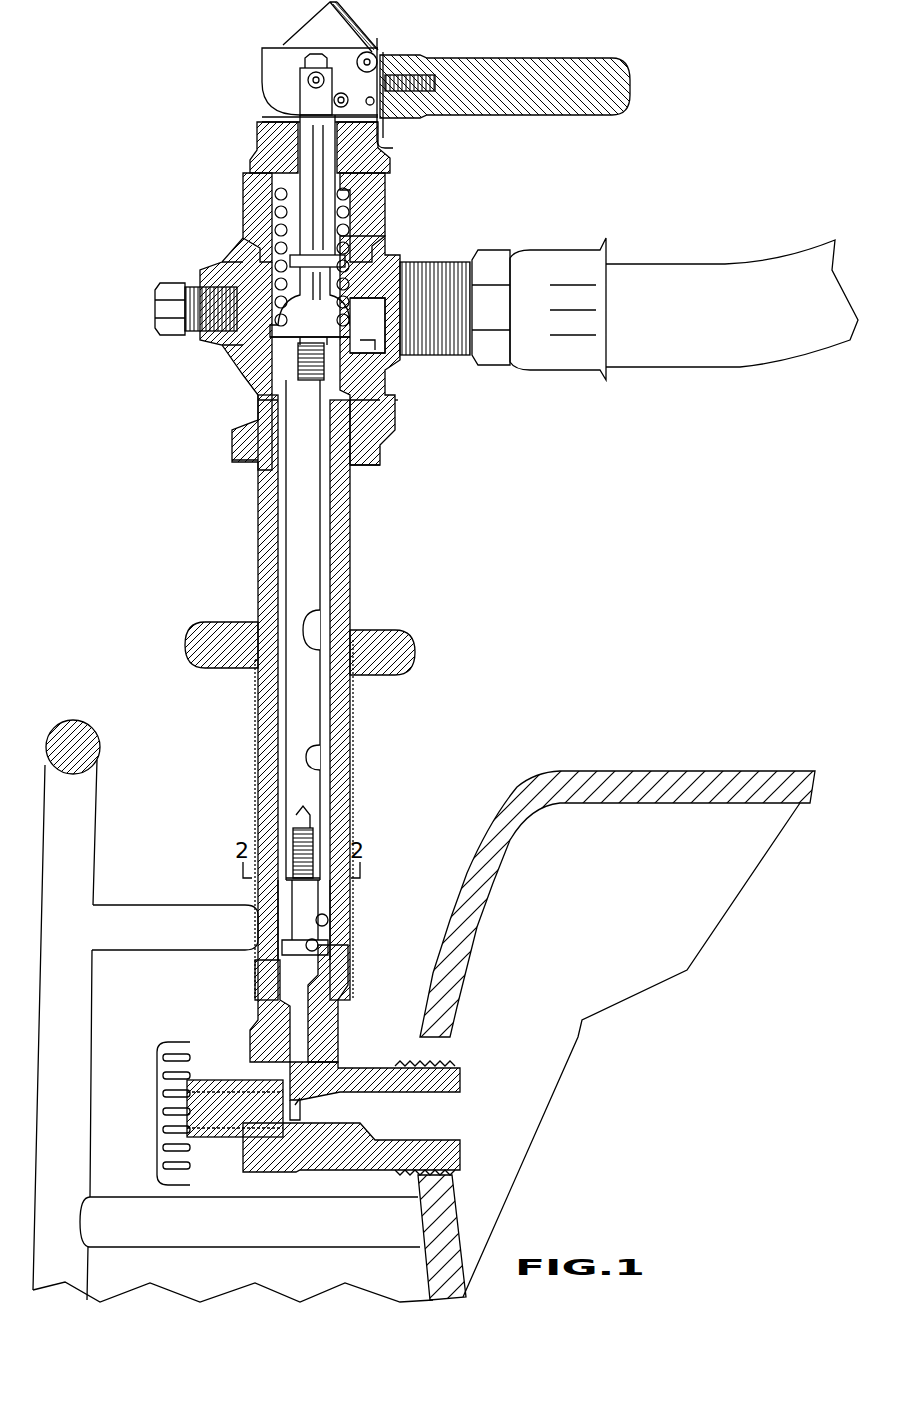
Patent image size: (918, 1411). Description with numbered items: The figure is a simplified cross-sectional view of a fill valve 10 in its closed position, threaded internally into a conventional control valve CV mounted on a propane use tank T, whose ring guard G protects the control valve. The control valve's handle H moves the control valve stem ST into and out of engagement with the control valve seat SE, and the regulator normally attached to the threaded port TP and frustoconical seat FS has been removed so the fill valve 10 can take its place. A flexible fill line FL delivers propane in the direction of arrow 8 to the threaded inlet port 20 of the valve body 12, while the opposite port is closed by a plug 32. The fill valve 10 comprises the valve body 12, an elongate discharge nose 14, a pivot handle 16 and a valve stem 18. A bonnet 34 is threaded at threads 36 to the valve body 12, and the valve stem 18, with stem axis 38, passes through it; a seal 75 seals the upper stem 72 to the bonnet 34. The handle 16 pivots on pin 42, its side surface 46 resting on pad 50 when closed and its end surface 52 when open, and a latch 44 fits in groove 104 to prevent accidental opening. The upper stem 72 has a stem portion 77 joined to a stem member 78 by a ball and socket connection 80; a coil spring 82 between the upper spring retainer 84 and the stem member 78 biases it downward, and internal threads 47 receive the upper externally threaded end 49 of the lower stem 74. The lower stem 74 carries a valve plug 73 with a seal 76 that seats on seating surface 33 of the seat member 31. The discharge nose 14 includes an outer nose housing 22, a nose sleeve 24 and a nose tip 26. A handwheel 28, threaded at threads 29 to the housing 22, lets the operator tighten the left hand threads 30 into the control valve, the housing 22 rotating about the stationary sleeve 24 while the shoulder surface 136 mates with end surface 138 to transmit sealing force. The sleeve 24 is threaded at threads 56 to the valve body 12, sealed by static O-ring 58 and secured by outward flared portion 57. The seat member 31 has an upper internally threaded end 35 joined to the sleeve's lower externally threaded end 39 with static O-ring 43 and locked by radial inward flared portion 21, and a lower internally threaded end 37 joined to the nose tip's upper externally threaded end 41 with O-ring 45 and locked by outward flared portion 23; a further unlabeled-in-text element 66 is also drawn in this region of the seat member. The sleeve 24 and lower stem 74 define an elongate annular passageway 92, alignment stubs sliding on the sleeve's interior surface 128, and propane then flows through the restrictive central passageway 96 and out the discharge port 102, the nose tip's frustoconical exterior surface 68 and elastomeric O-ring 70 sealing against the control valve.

The arrow 8 is at (370, 316).
The fill valve 10 is at (381, 572).
The valve body 12 is at (233, 268).
The elongate discharge nose 14 is at (218, 810).
The pivot handle 16 is at (578, 112).
The valve stem 18 is at (298, 576).
The threaded inlet port 20 is at (440, 268).
The radial inward flared portion 21 is at (330, 888).
The outer nose housing 22 is at (262, 727).
The outward flared portion 23 is at (322, 985).
The nose sleeve 24 is at (338, 713).
The nose tip 26 is at (320, 1020).
The handwheel 28 is at (395, 668).
The threads 29 is at (318, 610).
The threads 30 is at (262, 1018).
The seat member 31 is at (272, 962).
The plug 32 is at (195, 330).
The seating surface 33 is at (318, 942).
The bonnet 34 is at (262, 147).
The upper internally threaded end 35 is at (328, 922).
The threads 36 is at (262, 250).
The lower internally threaded end 37 is at (268, 985).
The stem axis 38 is at (323, 192).
The lower externally threaded end 39 is at (262, 897).
The upper externally threaded end 41 is at (320, 990).
The pin 42 is at (308, 80).
The static O-ring 43 is at (268, 919).
The latch 44 is at (381, 133).
The O-ring 45 is at (268, 1010).
The side surface 46 is at (377, 95).
The internal threads 47 is at (322, 378).
The upper externally threaded end 49 is at (300, 362).
The pad 50 is at (265, 113).
The end surface 52 is at (262, 55).
The threads 56 is at (380, 437).
The outward flared portion 57 is at (392, 421).
The static O-ring 58 is at (383, 458).
The o-ring 66 is at (328, 910).
The frustoconical exterior surface 68 is at (330, 1050).
The elastomeric O-ring 70 is at (318, 1062).
The upper stem 72 is at (358, 172).
The valve plug 73 is at (300, 892).
The lower stem 74 is at (308, 798).
The seal 75 is at (340, 198).
The seal 76 is at (278, 945).
The stem portion 77 is at (305, 172).
The stem member 78 is at (337, 330).
The ball and socket connection 80 is at (318, 292).
The coil spring 82 is at (355, 248).
The upper spring retainer 84 is at (342, 205).
The elongate annular passageway 92 is at (325, 529).
The central passageway 96 is at (280, 1057).
The discharge port 102 is at (300, 1105).
The groove 104 is at (380, 150).
The interior surface 128 is at (318, 765).
The shoulder surface 136 is at (300, 1030).
The end surface 138 is at (165, 1045).
The control valve CV is at (297, 1170).
The flexible fill line FL is at (765, 290).
The frustoconical seat FS is at (262, 1040).
The ring guard G is at (70, 1005).
The handle H is at (158, 1102).
The control valve seat SE is at (310, 1095).
The control valve stem ST is at (248, 1128).
The propane use tank T is at (646, 795).
The threaded port TP is at (325, 1003).